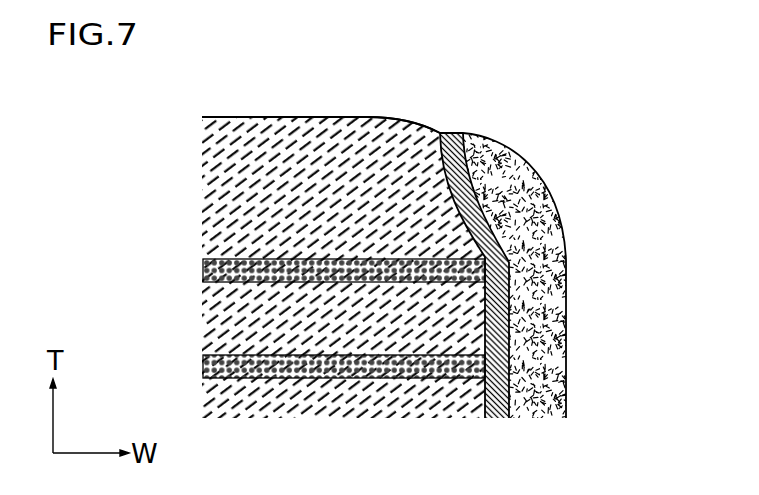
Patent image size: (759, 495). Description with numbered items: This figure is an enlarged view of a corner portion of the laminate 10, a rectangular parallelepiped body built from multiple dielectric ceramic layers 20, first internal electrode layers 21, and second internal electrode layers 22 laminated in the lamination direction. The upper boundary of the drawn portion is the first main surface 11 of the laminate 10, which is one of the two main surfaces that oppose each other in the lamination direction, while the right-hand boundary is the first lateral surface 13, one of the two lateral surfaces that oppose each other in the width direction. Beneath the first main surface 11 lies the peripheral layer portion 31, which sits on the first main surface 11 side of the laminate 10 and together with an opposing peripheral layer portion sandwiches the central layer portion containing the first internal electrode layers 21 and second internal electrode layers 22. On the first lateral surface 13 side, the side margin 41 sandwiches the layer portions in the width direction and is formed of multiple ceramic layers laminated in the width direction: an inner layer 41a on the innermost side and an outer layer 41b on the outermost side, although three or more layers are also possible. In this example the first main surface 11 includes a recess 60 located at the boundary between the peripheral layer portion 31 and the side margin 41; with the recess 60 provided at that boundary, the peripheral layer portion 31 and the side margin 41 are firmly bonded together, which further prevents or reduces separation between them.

The laminate 10 is at (582, 168).
The first main surface 11 is at (232, 117).
The first lateral surface 13 is at (566, 382).
The dielectric ceramic layer 20 is at (210, 315).
The first internal electrode layer 21 is at (207, 267).
The second internal electrode layer 22 is at (208, 362).
The peripheral layer portion 31 is at (190, 117).
The side margin 41 is at (573, 239).
The inner layer 41a is at (549, 239).
The outer layer 41b is at (551, 275).
The recess 60 is at (438, 132).